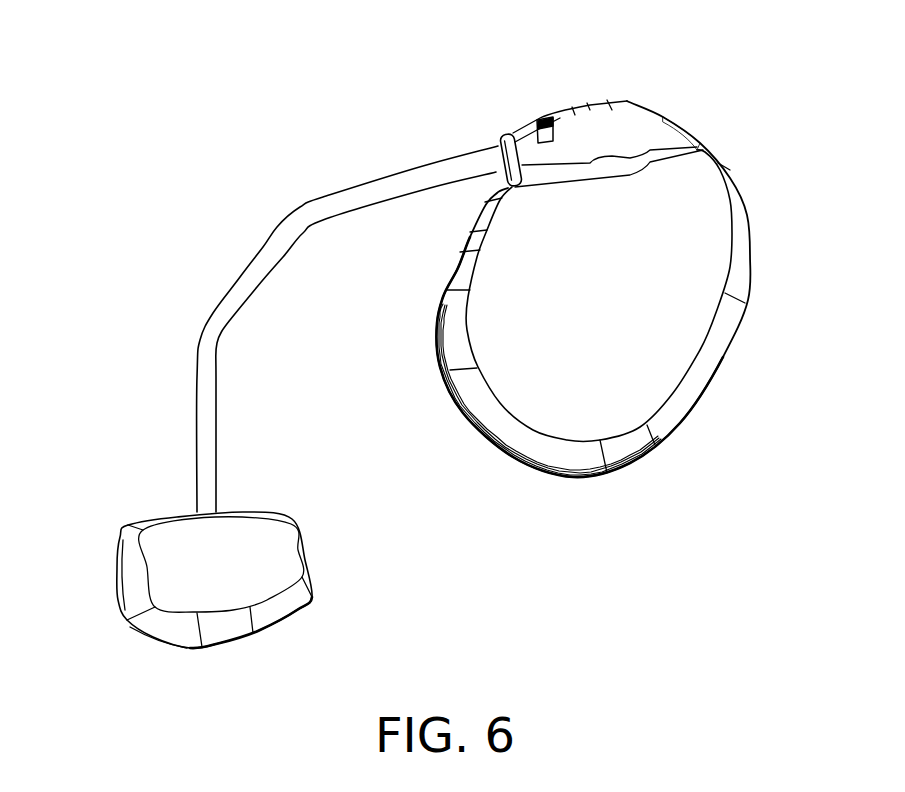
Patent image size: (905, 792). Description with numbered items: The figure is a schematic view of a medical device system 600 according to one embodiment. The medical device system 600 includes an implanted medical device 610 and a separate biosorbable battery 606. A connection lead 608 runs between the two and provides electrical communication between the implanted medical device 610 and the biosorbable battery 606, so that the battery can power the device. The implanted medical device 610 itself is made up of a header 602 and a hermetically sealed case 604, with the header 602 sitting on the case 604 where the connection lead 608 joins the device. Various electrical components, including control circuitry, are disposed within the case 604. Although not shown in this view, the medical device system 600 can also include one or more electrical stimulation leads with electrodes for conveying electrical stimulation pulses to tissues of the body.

The medical device system 600 is at (337, 165).
The header 602 is at (568, 147).
The hermetically sealed case 604 is at (645, 338).
The biosorbable battery 606 is at (163, 537).
The connection lead 608 is at (267, 262).
The implanted medical device 610 is at (698, 107).